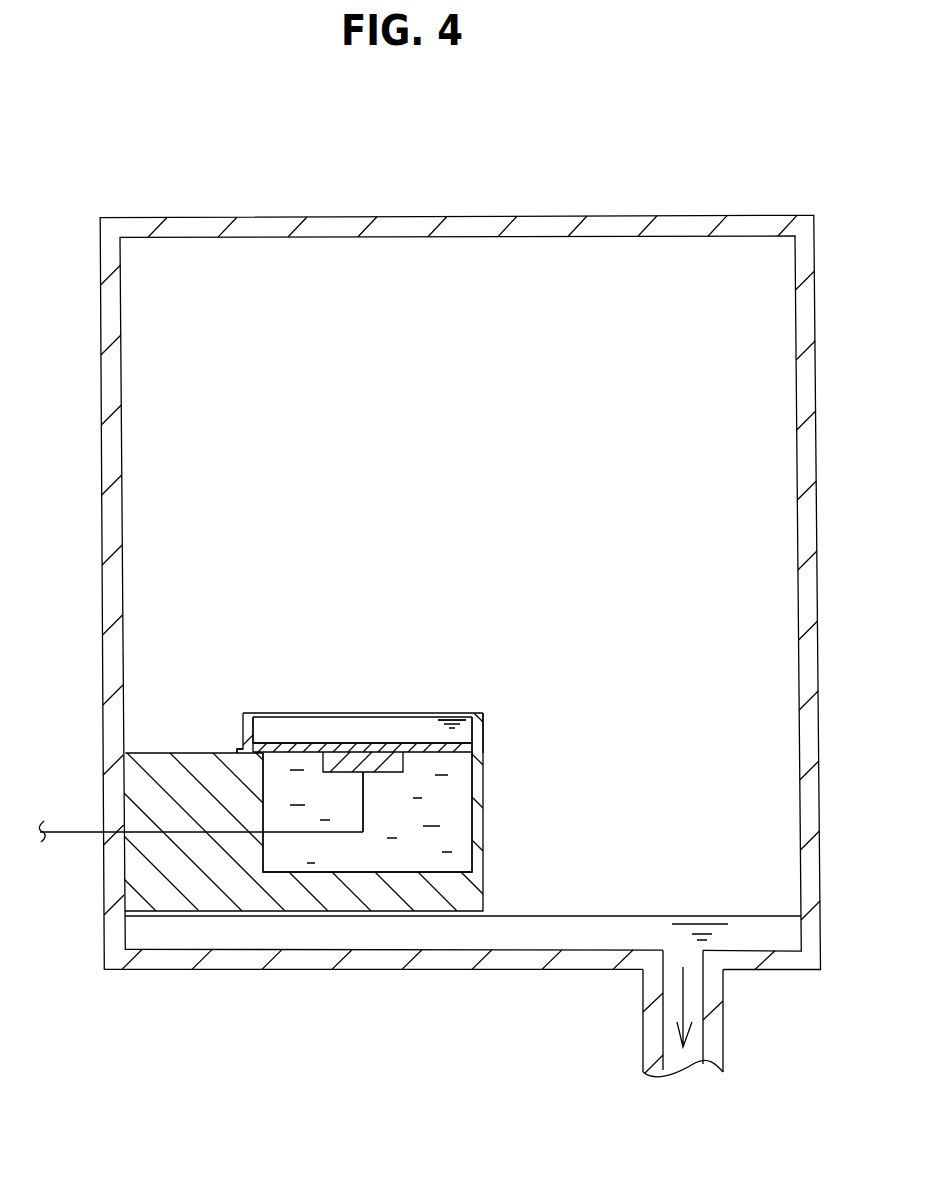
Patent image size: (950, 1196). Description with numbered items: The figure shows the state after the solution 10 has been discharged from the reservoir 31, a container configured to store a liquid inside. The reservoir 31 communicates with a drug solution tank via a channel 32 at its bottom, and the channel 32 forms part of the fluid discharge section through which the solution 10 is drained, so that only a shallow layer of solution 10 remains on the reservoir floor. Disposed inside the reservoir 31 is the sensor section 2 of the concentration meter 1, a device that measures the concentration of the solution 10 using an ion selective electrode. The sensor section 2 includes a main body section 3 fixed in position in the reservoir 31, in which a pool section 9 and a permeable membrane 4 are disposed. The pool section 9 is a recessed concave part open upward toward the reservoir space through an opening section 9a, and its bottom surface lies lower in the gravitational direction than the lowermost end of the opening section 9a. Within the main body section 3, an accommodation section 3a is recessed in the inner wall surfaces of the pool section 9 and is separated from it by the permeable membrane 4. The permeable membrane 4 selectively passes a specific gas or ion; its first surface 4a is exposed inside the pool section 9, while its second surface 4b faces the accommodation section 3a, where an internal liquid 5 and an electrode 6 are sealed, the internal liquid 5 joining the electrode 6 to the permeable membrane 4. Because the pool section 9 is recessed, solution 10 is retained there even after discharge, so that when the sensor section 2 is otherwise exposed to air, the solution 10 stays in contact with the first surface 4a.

The concentration meter 1 is at (168, 652).
The sensor section 2 is at (529, 793).
The main body section 3 is at (484, 885).
The accommodation section 3a is at (462, 758).
The permeable membrane 4 is at (466, 750).
The first surface 4a is at (321, 751).
The second surface 4b is at (277, 757).
The internal liquid 5 is at (448, 838).
The electrode 6 is at (403, 772).
The pool section 9 is at (288, 729).
The opening section 9a is at (456, 717).
The solution 10 is at (417, 712).
The reservoir 31 is at (461, 217).
The channel 32 is at (643, 1054).